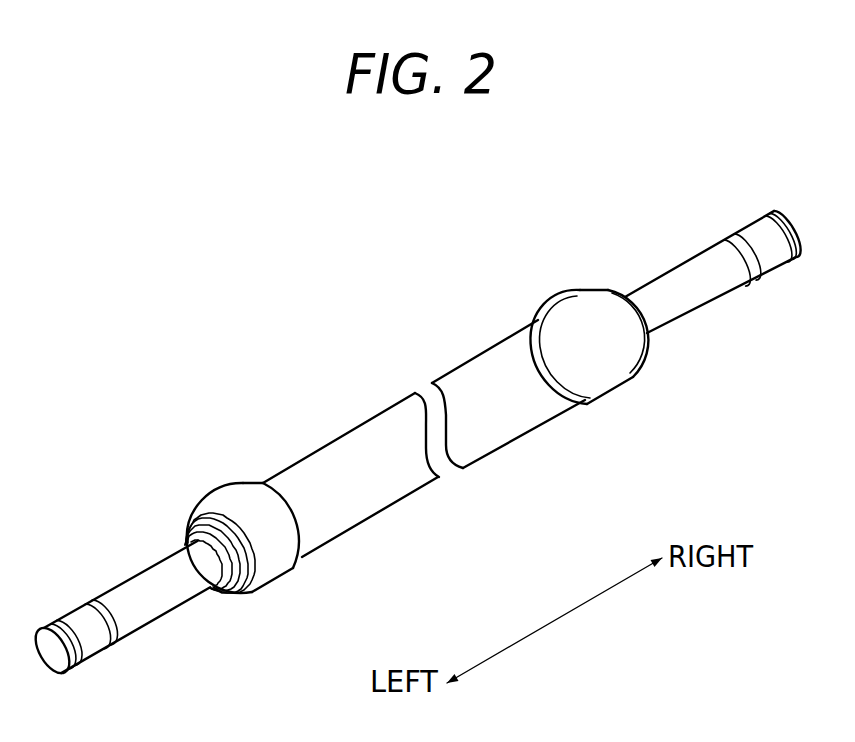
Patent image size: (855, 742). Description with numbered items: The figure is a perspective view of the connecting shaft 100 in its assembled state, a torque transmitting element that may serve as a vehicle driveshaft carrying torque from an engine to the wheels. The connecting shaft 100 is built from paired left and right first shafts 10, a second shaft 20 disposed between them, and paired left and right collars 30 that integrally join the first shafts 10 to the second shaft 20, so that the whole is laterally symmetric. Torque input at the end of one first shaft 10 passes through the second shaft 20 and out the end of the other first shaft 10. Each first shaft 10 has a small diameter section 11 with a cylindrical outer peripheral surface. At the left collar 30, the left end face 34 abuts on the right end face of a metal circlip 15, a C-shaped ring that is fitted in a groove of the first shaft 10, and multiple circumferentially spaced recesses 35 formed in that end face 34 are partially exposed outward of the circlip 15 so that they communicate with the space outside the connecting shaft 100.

The connecting shaft 100 is at (366, 334).
The first shaft 10 is at (122, 579).
The small diameter section 11 is at (138, 613).
The second shaft 20 is at (481, 352).
The collar 30 is at (224, 489).
The left end face 34 is at (252, 588).
The recesses 35 is at (187, 527).
The circlip 15 is at (239, 598).